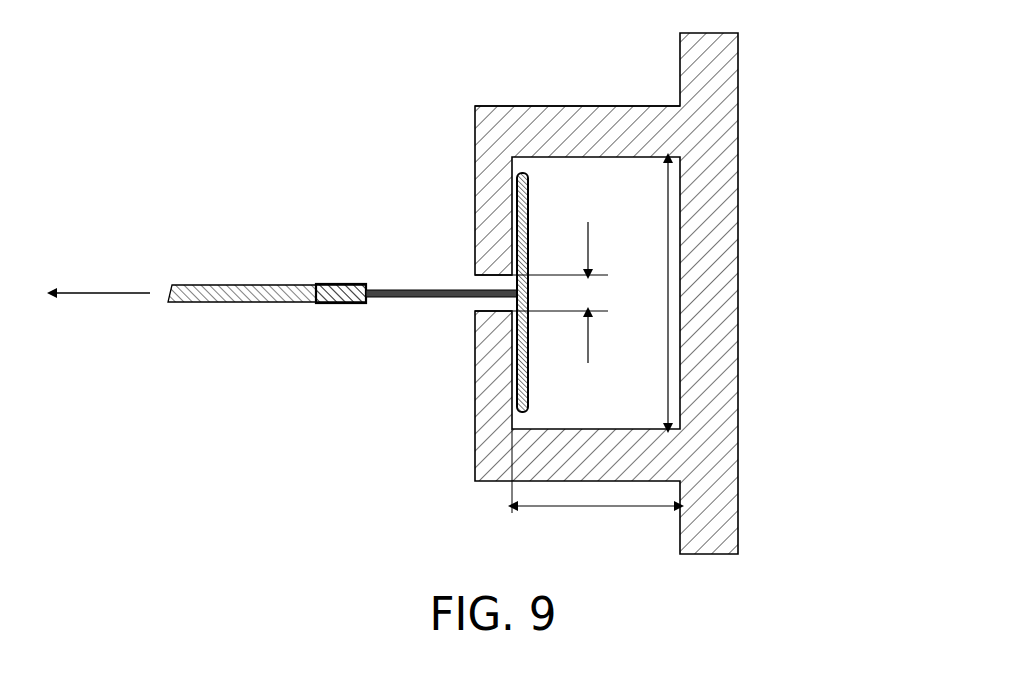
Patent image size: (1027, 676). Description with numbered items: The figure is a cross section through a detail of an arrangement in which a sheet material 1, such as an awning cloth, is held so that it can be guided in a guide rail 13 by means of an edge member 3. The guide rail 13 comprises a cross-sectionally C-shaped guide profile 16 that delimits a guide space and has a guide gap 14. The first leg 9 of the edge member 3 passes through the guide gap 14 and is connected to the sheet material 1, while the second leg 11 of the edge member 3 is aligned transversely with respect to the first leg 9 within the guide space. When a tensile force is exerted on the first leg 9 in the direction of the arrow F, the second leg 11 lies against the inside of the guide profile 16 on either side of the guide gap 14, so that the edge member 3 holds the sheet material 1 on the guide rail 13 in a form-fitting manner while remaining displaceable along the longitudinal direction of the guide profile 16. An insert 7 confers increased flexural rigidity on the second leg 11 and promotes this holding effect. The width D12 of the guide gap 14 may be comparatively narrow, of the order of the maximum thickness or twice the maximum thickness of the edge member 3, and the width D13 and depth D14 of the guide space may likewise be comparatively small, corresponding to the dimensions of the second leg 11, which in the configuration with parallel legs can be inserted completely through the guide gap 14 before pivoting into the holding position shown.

The sheet material 1 is at (230, 282).
The edge member 3 is at (447, 299).
The insert 7 is at (530, 337).
The first leg 9 is at (409, 287).
The second leg 11 is at (531, 213).
The guide rail 13 is at (644, 79).
The guide gap 14 is at (472, 272).
The guide profile 16 is at (507, 106).
The arrow F is at (118, 292).
The width of the guide gap D12 is at (560, 292).
The width of the guide space D13 is at (646, 293).
The depth of the guide space D14 is at (595, 480).